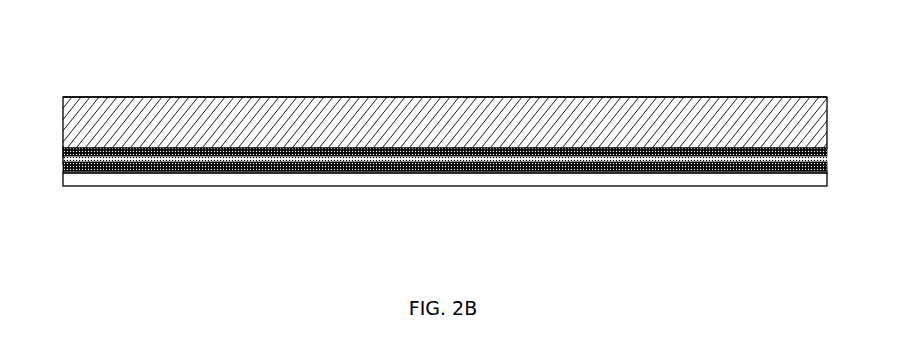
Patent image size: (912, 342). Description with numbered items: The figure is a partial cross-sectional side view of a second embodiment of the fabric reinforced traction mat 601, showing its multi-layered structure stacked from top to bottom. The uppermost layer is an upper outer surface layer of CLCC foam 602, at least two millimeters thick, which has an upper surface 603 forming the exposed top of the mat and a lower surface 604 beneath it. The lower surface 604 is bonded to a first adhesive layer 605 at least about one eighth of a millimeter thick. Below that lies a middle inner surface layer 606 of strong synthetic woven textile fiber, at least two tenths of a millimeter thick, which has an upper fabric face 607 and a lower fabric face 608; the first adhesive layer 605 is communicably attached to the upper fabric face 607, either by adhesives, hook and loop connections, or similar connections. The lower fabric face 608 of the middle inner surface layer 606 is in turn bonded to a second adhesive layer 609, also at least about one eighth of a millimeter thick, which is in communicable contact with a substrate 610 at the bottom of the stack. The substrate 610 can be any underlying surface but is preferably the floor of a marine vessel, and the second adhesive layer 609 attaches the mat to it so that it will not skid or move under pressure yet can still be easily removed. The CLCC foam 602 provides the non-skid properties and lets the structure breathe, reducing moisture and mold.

The fabric reinforced traction mat 601 is at (503, 97).
The upper outer surface layer of CLCC foam 602 is at (613, 118).
The upper surface 603 is at (734, 97).
The lower surface 604 is at (800, 147).
The first adhesive layer 605 is at (825, 150).
The middle inner surface layer 606 is at (133, 162).
The upper fabric face 607 is at (63, 152).
The lower fabric face 608 is at (63, 160).
The second adhesive layer 609 is at (378, 172).
The substrate 610 is at (519, 186).